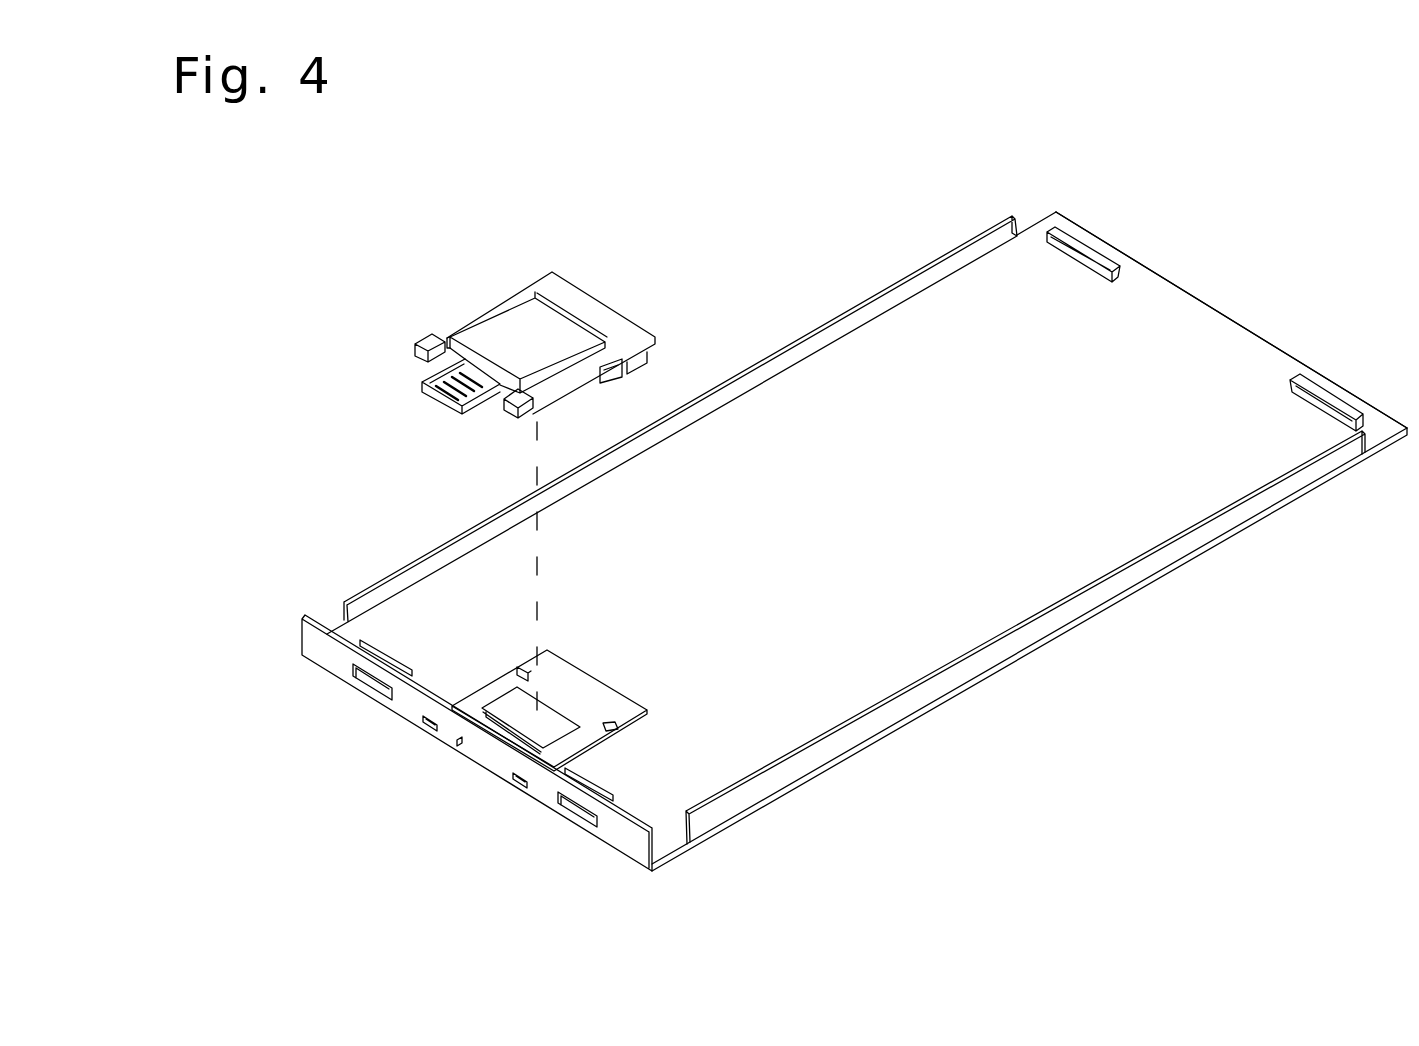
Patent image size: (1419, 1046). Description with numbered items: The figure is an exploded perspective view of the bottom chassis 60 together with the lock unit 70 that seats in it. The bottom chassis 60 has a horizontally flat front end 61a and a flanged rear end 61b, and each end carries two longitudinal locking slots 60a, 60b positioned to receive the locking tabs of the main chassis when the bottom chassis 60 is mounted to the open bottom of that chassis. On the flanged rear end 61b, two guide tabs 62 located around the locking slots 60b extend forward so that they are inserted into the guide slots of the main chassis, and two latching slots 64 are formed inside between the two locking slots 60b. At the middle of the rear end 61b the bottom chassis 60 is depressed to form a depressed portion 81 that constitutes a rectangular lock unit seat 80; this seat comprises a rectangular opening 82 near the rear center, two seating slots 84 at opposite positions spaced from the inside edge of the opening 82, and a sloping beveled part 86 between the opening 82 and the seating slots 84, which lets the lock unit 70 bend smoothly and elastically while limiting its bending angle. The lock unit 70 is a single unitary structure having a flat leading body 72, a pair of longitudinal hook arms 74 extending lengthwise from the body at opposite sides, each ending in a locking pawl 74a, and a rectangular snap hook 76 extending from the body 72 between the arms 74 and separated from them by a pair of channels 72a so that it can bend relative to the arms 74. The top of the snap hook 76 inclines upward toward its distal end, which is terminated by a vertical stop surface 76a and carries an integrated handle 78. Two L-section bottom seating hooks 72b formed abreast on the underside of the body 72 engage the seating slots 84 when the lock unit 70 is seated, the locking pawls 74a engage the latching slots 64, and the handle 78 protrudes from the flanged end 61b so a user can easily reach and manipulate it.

The bottom chassis 60 is at (1047, 659).
The locking slots 60a is at (1080, 253).
The locking slots 60b is at (352, 680).
The front end 61a is at (1224, 305).
The rear end 61b is at (630, 848).
The guide tabs 62 is at (371, 640).
The latching slots 64 is at (422, 723).
The lock unit 70 is at (502, 333).
The leading body 72 is at (590, 298).
The channels 72a is at (537, 282).
The bottom seating hooks 72b is at (627, 370).
The hook arms 74 is at (492, 308).
The locking pawls 74a is at (430, 337).
The snap hook 76 is at (517, 362).
The stop surface 76a is at (433, 385).
The handle 78 is at (440, 387).
The lock unit seat 80 is at (611, 722).
The depressed portion 81 is at (599, 707).
The opening 82 is at (523, 745).
The seating slots 84 is at (520, 668).
The beveled part 86 is at (483, 712).